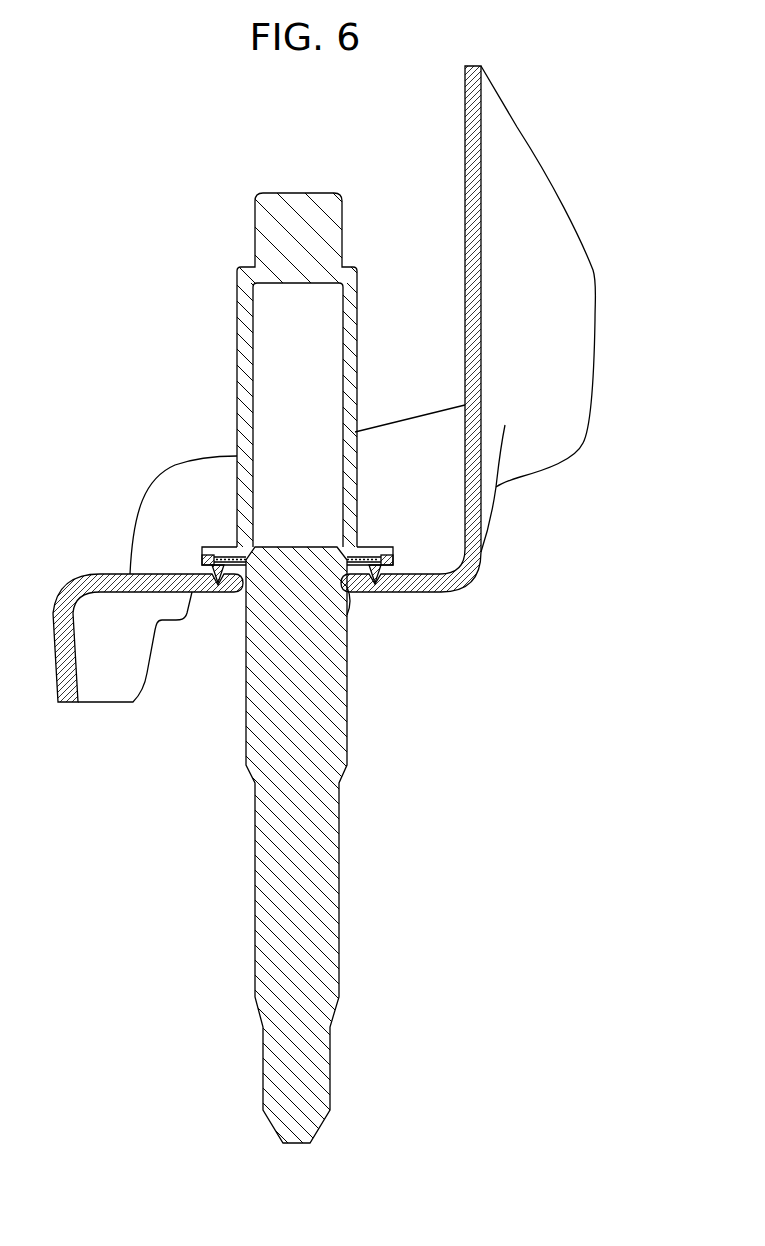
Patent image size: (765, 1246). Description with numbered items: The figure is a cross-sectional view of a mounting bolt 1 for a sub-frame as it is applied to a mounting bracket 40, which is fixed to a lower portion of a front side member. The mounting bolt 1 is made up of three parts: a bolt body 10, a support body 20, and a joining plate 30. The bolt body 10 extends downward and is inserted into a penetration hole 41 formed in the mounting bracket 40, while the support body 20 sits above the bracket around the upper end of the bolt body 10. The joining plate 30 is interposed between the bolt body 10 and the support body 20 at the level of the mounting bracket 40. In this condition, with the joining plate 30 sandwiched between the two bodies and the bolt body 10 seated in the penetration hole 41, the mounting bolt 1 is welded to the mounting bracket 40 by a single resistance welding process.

The mounting bolt 1 is at (234, 635).
The bolt body 10 is at (265, 877).
The support body 20 is at (240, 358).
The joining plate 30 is at (200, 562).
The mounting bracket 40 is at (588, 300).
The penetration hole 41 is at (347, 618).